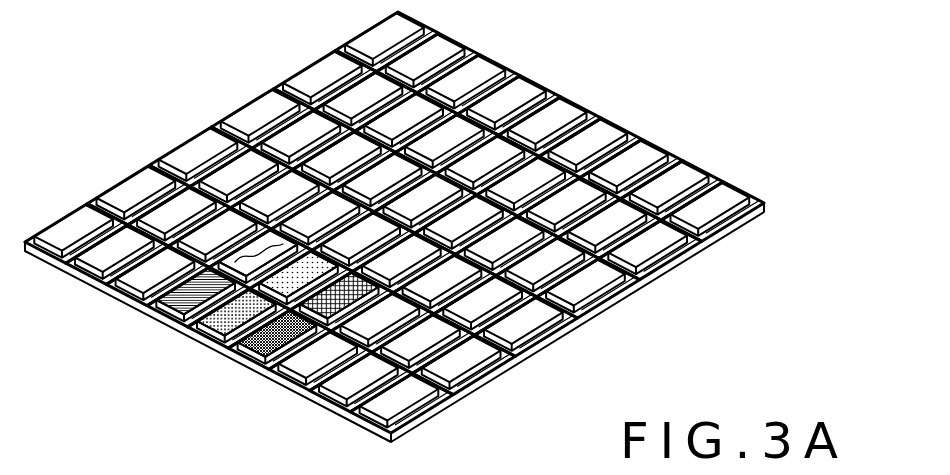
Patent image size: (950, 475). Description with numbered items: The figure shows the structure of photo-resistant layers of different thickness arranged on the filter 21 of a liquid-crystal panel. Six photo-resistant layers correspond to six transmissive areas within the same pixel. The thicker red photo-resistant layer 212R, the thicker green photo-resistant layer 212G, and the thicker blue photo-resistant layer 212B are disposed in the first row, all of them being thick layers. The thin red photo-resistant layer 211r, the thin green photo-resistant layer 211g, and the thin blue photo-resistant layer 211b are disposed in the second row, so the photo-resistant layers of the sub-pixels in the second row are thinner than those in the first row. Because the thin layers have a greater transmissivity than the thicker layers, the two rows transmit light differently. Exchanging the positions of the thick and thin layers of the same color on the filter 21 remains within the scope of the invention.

The filter 21 is at (720, 97).
The thin red photo-resistant layer 211r is at (147, 307).
The thin green photo-resistant layer 211g is at (192, 325).
The thin blue photo-resistant layer 211b is at (231, 347).
The thicker red photo-resistant layer 212R is at (273, 240).
The thicker green photo-resistant layer 212G is at (325, 248).
The thicker blue photo-resistant layer 212B is at (372, 240).